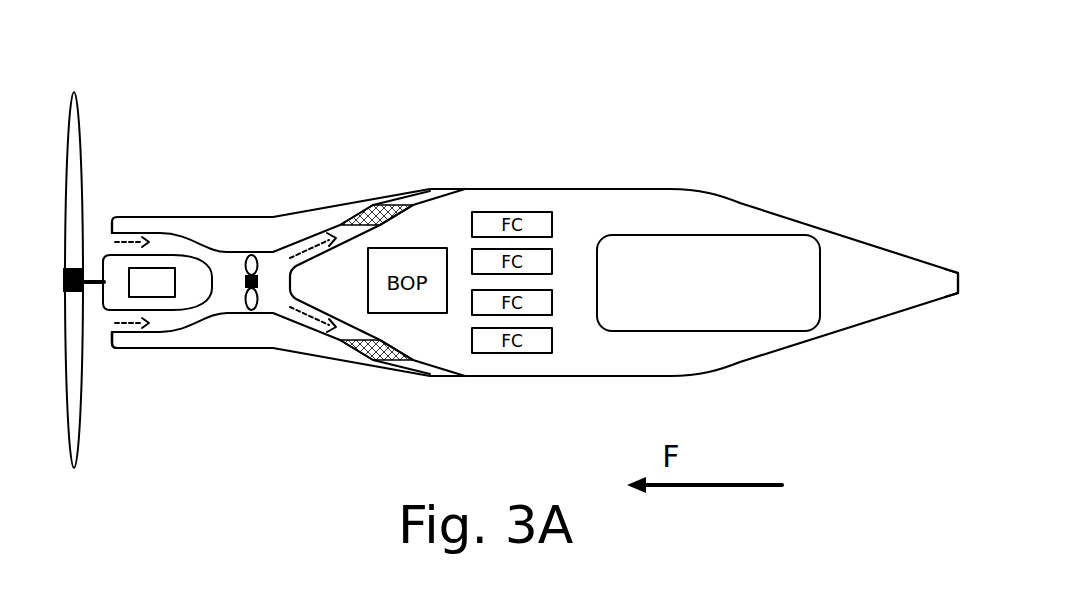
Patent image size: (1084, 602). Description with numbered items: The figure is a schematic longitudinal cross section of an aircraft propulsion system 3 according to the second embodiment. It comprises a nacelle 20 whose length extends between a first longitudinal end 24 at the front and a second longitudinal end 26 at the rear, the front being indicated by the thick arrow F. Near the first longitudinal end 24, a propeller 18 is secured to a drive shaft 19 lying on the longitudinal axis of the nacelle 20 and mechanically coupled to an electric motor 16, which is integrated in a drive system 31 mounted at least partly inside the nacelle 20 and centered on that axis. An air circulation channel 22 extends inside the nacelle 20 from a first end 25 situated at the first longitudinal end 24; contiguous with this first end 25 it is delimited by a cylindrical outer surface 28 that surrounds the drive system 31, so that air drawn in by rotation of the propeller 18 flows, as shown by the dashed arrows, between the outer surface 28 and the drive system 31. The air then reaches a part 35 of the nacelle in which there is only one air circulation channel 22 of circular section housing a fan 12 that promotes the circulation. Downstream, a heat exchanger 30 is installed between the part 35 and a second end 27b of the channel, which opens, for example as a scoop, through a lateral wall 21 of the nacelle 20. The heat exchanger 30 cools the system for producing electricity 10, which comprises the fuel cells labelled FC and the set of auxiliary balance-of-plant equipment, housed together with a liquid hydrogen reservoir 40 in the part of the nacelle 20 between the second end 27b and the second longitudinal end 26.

The aircraft propulsion system 3 is at (908, 120).
The system for producing electricity 10 is at (546, 395).
The fan 12 is at (254, 302).
The electric motor 16 is at (155, 268).
The propeller 18 is at (86, 126).
The drive shaft 19 is at (106, 262).
The nacelle 20 is at (743, 200).
The lateral wall 21 is at (600, 182).
The air circulation channel 22 is at (221, 262).
The first longitudinal end 24 is at (131, 364).
The first end of the air circulation channel 25 is at (96, 334).
The second longitudinal end 26 is at (952, 360).
The second end of the air circulation channel 27b is at (434, 184).
The outer surface 28 is at (155, 328).
The heat exchanger 30 is at (407, 362).
The drive system 31 is at (184, 252).
The part of the nacelle 35 is at (212, 90).
The reservoir of dihydrogen 40 is at (763, 331).